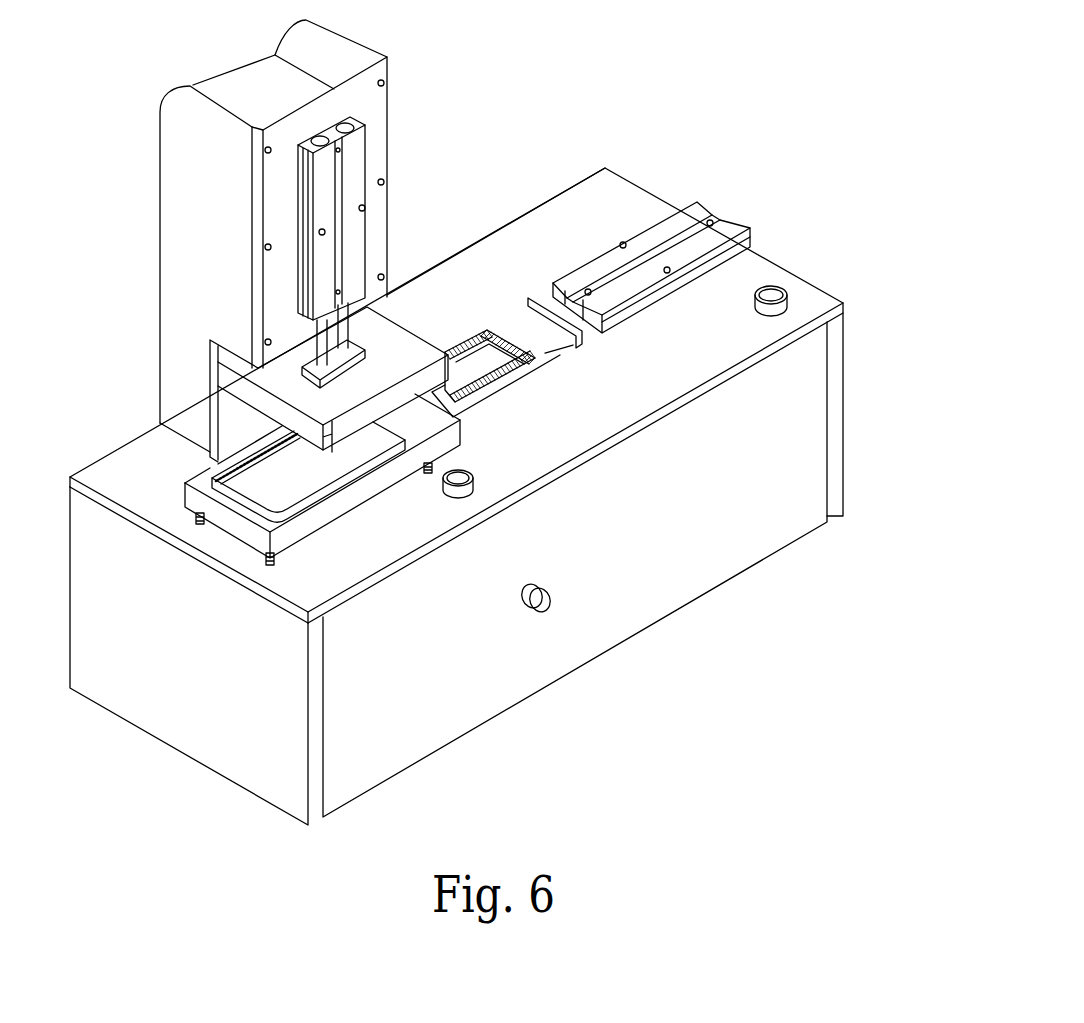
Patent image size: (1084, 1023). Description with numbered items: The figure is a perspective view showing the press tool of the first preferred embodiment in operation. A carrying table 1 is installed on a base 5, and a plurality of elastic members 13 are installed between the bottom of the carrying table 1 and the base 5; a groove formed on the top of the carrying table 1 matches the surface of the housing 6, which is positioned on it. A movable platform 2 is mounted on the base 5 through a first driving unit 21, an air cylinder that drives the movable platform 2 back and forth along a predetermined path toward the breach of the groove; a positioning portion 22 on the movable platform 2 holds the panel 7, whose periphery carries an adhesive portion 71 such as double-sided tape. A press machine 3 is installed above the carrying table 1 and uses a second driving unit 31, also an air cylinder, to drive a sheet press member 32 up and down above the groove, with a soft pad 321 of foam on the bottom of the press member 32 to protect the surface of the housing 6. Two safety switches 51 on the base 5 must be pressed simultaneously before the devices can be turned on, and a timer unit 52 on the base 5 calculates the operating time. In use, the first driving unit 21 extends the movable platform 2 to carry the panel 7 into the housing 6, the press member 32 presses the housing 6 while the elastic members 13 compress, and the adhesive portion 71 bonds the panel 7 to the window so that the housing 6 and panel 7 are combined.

The carrying table 1 is at (357, 507).
The elastic member 13 is at (265, 565).
The movable platform 2 is at (548, 343).
The first driving unit 21 is at (617, 243).
The positioning portion 22 is at (507, 380).
The press machine 3 is at (440, 118).
The second driving unit 31 is at (368, 180).
The press member 32 is at (401, 340).
The soft pad 321 is at (267, 415).
The base 5 is at (590, 176).
The safety switch 51 is at (462, 480).
The timer unit 52 is at (545, 612).
The housing 6 is at (233, 470).
The panel 7 is at (473, 358).
The adhesive portion 71 is at (507, 345).